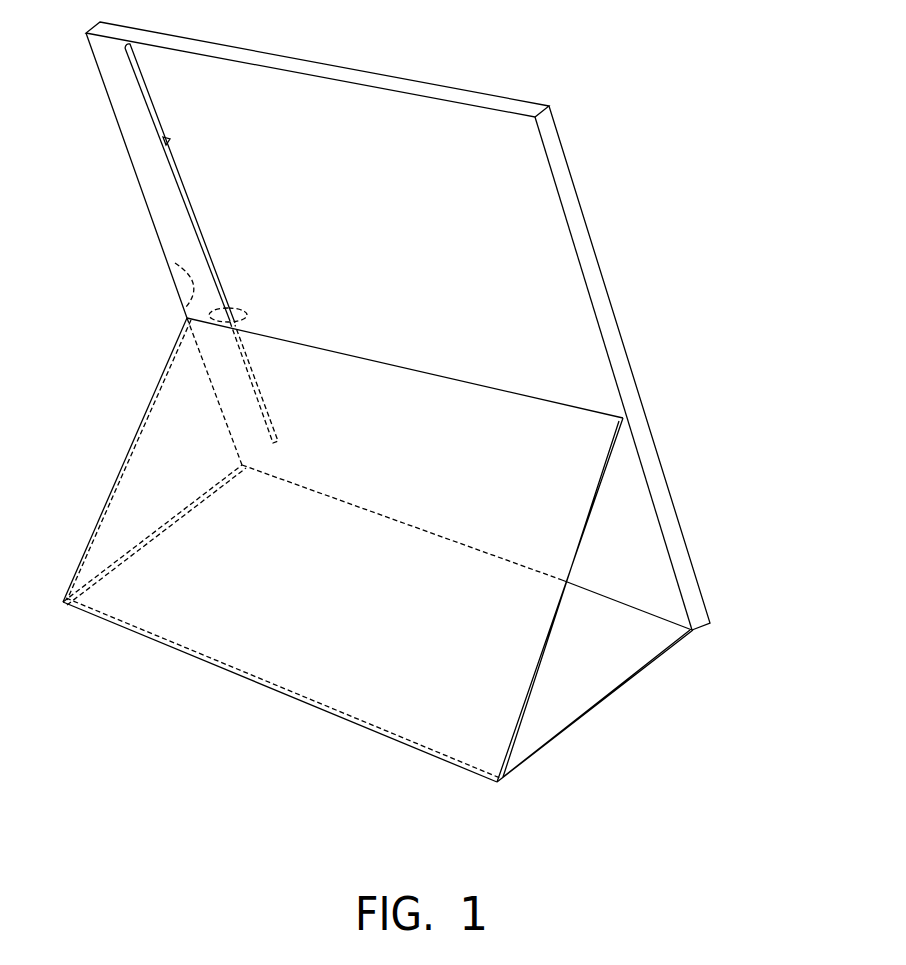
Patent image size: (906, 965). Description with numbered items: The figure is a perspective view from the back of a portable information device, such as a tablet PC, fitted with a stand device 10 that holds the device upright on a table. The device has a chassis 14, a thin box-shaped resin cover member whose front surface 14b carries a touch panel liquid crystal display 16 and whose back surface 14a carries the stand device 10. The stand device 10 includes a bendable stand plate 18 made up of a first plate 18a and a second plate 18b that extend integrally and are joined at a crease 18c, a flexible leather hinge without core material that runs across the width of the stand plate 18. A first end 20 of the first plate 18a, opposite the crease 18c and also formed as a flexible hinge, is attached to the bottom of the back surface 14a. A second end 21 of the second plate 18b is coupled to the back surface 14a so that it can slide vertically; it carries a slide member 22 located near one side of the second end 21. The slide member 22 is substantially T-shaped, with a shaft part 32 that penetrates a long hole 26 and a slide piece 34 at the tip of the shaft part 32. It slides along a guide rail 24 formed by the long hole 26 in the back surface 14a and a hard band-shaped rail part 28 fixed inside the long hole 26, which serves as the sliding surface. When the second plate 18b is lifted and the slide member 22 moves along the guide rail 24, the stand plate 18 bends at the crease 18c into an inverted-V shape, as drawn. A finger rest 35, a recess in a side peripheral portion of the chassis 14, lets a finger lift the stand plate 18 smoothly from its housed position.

The stand device 10 is at (420, 409).
The chassis 14 is at (372, 325).
The back surface 14a is at (577, 332).
The front surface 14b is at (610, 293).
The display 16 is at (525, 154).
The stand plate 18 is at (434, 548).
The first plate 18a is at (622, 622).
The second plate 18b is at (570, 528).
The crease 18c is at (386, 690).
The first end 20 is at (688, 647).
The second end 21 is at (422, 370).
The slide member 22 is at (278, 349).
The guide rail 24 is at (135, 183).
The long hole 26 is at (163, 142).
The rail part 28 is at (165, 157).
The shaft part 32 is at (237, 322).
The slide piece 34 is at (236, 307).
The finger rest 35 is at (180, 292).